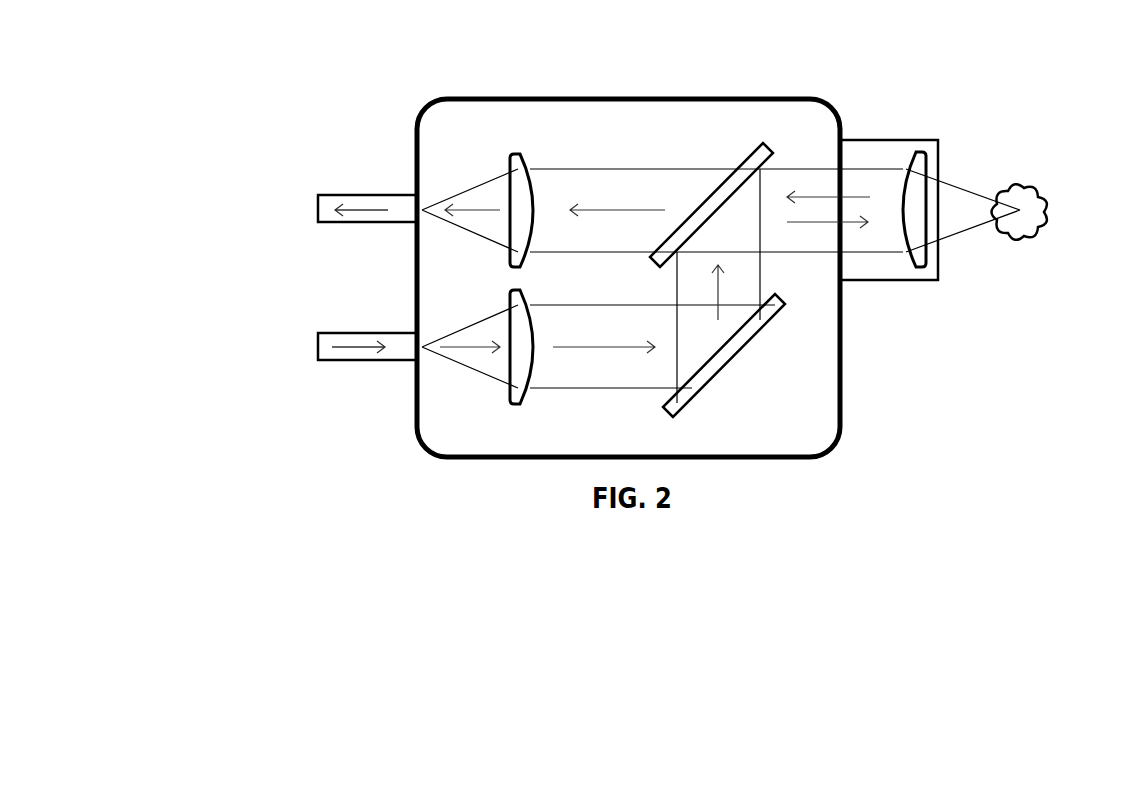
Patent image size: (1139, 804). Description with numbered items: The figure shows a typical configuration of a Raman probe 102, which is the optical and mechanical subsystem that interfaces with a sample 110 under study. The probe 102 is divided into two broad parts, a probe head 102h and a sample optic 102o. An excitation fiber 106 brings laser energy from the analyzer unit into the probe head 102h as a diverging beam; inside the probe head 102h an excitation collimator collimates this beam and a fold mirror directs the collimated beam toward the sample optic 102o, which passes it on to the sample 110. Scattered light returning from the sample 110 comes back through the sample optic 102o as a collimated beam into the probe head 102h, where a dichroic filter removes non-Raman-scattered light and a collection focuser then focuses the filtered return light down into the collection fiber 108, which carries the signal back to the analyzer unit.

The probe 102 is at (202, 72).
The probe head 102h is at (840, 86).
The sample optic 102o is at (900, 140).
The excitation fiber 106 is at (357, 330).
The collection fiber 108 is at (358, 230).
The sample 110 is at (1054, 195).